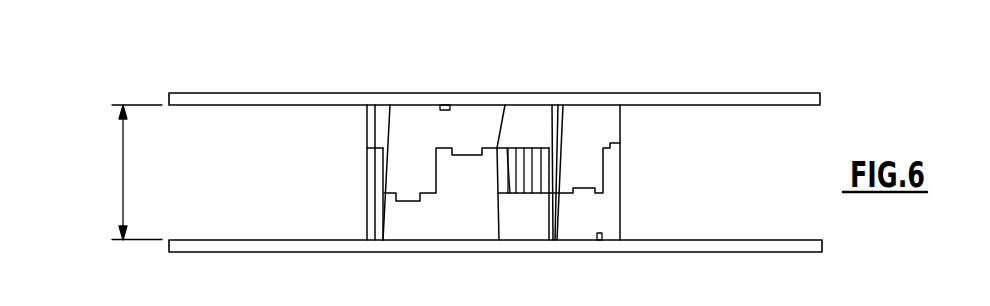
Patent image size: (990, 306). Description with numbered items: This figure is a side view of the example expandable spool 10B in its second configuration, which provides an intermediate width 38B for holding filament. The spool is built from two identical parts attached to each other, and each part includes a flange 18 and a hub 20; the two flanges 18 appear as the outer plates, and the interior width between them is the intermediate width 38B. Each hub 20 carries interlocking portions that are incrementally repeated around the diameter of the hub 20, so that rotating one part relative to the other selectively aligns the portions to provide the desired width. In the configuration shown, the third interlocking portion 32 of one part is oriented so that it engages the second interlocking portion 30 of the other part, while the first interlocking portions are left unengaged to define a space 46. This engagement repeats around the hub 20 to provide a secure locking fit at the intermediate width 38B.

The expandable spool 10B is at (714, 69).
The flange 18 is at (233, 245).
The hub 20 is at (408, 218).
The second interlocking portion 30 is at (472, 137).
The third interlocking portion 32 is at (410, 166).
The intermediate width 38B is at (121, 175).
The space 46 is at (537, 207).